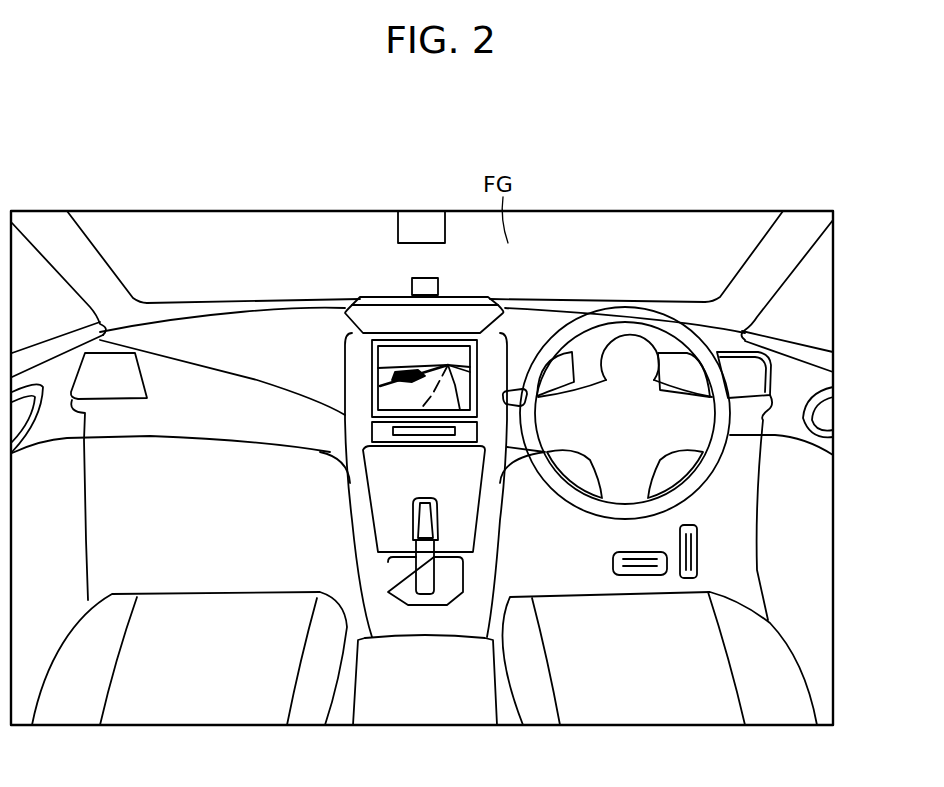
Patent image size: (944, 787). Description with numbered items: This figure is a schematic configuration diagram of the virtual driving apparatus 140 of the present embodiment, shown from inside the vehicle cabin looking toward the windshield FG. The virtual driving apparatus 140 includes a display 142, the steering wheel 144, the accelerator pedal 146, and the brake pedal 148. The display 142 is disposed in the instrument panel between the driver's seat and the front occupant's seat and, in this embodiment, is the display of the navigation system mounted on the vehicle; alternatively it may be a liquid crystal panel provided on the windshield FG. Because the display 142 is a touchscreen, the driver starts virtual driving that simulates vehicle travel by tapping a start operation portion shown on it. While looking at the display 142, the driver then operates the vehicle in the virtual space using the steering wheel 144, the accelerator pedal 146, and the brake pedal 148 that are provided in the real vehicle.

The virtual driving apparatus 140 is at (620, 158).
The display 142 is at (372, 357).
The steering wheel 144 is at (720, 465).
The accelerator pedal 146 is at (697, 547).
The brake pedal 148 is at (638, 577).